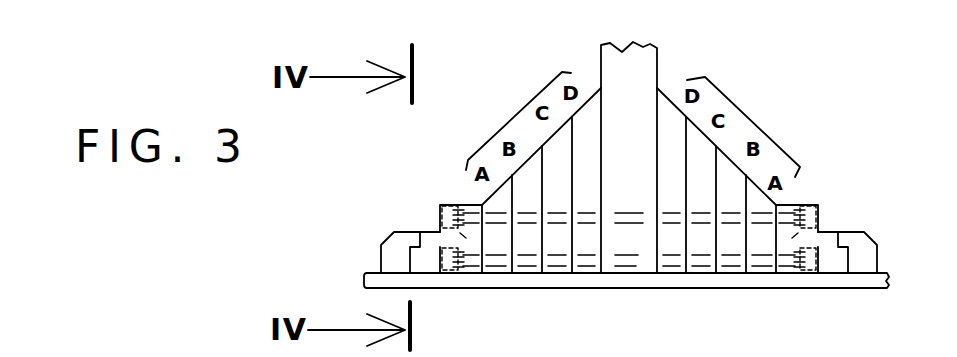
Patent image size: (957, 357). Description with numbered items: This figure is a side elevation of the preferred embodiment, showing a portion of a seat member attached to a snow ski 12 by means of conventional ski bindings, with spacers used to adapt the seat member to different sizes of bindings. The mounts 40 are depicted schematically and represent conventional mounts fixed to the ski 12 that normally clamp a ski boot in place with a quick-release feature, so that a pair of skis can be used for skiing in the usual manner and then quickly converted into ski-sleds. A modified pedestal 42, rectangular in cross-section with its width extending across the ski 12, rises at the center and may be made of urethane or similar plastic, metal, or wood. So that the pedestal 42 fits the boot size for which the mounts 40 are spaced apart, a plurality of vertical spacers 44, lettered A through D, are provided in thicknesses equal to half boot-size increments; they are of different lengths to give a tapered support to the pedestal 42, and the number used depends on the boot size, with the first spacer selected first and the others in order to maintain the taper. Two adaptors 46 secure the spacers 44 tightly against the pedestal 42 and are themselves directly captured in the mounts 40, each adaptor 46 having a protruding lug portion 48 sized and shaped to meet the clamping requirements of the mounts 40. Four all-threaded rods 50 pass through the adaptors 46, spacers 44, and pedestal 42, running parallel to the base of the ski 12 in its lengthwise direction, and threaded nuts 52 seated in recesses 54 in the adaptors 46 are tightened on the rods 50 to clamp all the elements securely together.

The ski 12 is at (660, 289).
The mounts 40 is at (382, 240).
The pedestal 42 is at (660, 62).
The vertical spacers 44 is at (513, 113).
The adaptors 46 is at (440, 203).
The protruding lug portion 48 is at (424, 230).
The all-threaded rods 50 is at (643, 212).
The threaded nuts 52 is at (466, 240).
The recesses 54 is at (465, 193).